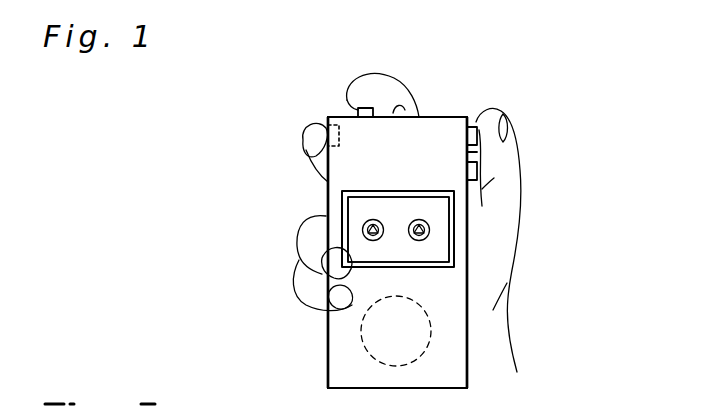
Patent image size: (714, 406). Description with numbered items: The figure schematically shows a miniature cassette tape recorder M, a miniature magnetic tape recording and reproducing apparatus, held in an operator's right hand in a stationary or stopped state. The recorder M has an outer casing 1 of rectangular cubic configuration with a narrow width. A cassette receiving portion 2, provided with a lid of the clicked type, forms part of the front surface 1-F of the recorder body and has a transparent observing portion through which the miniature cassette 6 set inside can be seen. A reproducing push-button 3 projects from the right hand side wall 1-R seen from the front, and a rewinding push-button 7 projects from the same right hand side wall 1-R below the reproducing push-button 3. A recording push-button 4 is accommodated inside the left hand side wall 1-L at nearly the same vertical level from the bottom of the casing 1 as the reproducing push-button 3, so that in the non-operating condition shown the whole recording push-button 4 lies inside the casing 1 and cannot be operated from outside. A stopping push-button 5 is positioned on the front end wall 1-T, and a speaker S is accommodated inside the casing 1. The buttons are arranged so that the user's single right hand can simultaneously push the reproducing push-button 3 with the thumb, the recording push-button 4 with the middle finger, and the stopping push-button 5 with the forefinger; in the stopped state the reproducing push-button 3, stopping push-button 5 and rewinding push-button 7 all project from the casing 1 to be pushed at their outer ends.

The outer casing 1 is at (425, 140).
The front end wall 1-T is at (450, 117).
The right hand side wall 1-R is at (480, 153).
The front surface 1-F is at (376, 164).
The left hand side wall 1-L is at (328, 200).
The cassette receiving portion 2 is at (455, 246).
The reproducing push-button 3 is at (477, 130).
The recording push-button 4 is at (330, 127).
The stopping push-button 5 is at (359, 110).
The miniature cassette 6 is at (417, 256).
The rewinding push-button 7 is at (478, 174).
The speaker S is at (387, 333).
The miniature cassette tape recorder M is at (327, 375).